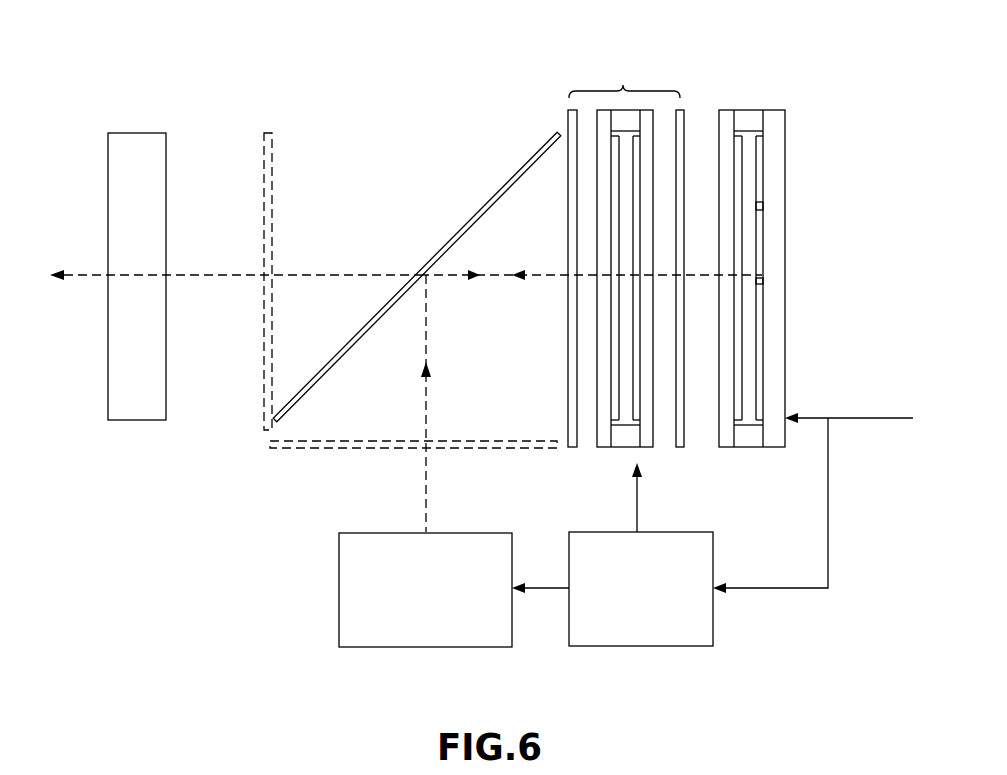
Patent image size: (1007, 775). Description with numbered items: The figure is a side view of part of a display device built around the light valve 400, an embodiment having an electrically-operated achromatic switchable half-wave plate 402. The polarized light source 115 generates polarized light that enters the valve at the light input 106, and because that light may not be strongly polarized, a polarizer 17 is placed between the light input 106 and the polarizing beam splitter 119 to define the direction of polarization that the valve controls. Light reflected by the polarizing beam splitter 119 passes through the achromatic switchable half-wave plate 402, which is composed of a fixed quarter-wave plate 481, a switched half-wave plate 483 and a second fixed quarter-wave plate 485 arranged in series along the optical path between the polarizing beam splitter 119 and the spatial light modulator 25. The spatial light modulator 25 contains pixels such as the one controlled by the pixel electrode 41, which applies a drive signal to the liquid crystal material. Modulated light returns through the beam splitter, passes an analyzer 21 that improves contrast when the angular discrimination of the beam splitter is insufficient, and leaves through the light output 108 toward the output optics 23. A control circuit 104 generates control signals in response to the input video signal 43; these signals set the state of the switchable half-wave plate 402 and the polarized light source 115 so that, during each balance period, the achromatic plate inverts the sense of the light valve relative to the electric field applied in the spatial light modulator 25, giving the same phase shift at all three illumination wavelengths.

The output optics 23 is at (108, 395).
The analyzer 21 is at (273, 186).
The light output 108 is at (252, 241).
The polarizing beam splitter 119 is at (497, 192).
The light valve 400 is at (483, 364).
The polarizer 17 is at (314, 450).
The light input 106 is at (416, 463).
The achromatic switchable half-wave plate 402 is at (623, 85).
The fixed quarter-wave plate 481 is at (571, 450).
The switched half-wave plate 483 is at (624, 440).
The fixed quarter-wave plate 485 is at (679, 450).
The spatial light modulator 25 is at (785, 278).
The pixel electrode 41 is at (758, 226).
The input video signal 43 is at (862, 418).
The polarized light source 115 is at (339, 588).
The control circuit 104 is at (655, 646).